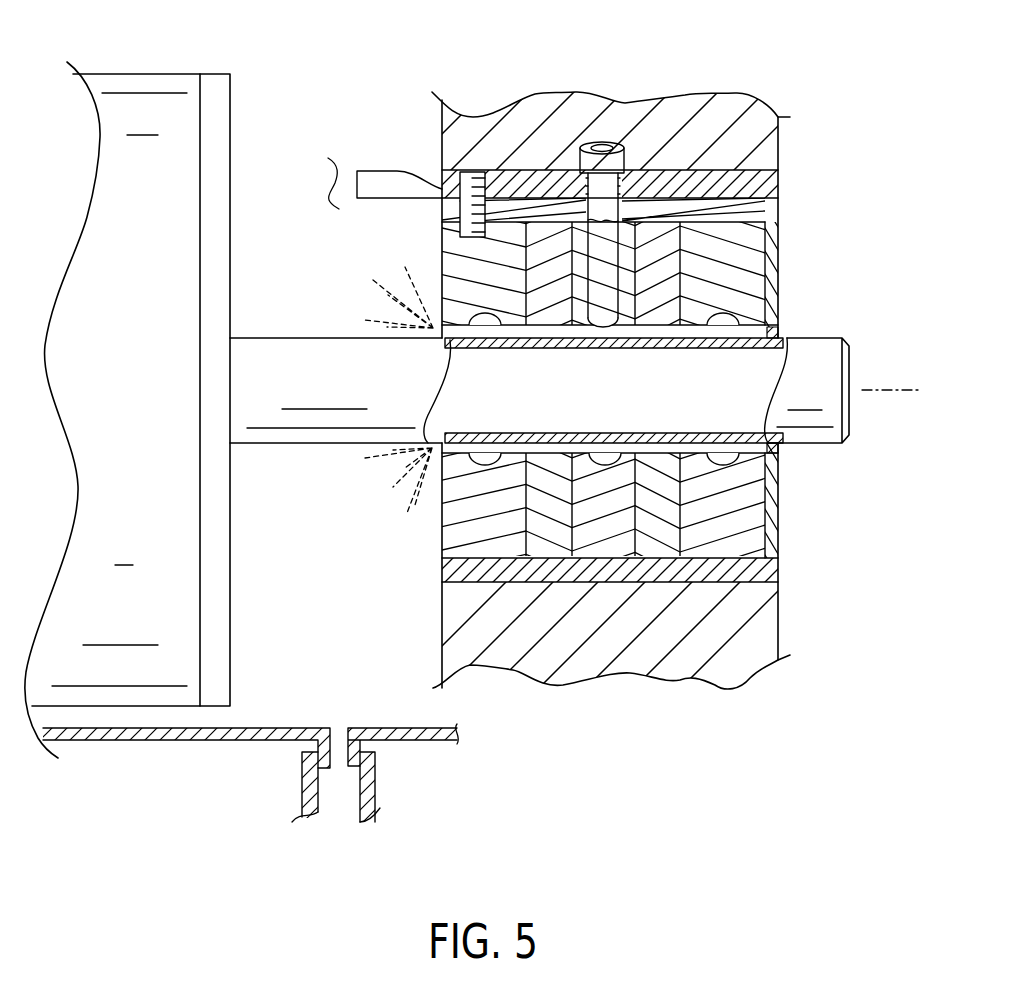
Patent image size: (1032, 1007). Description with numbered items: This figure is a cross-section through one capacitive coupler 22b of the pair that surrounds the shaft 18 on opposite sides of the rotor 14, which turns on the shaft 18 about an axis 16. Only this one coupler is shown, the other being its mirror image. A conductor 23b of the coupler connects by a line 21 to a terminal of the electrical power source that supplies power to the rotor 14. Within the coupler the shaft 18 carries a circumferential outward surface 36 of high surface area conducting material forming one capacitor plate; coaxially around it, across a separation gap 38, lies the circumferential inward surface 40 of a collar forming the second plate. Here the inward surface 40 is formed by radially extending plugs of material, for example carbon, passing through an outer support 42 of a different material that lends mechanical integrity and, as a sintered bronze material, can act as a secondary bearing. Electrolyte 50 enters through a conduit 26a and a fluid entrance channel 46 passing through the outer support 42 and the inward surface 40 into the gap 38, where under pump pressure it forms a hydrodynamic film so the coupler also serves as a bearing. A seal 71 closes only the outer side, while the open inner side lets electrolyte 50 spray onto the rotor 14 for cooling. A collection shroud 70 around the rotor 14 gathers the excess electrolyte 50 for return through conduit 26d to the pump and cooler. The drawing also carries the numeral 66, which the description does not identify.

The rotor 14 is at (141, 398).
The axis 16 is at (893, 392).
The shaft 18 is at (817, 348).
The lines 21 is at (347, 177).
The capacitive coupler 22b is at (802, 42).
The conductor 23b is at (440, 179).
The conduit 26a is at (624, 143).
The conduit 26d is at (376, 796).
The circumferential outward surface 36 is at (613, 432).
The separation gap 38 is at (787, 446).
The circumferential inward surface 40 is at (665, 325).
The outer support 42 is at (778, 181).
The fluid entrance channel 46 is at (609, 285).
The electrolyte 50 is at (410, 500).
The housing 66 is at (763, 623).
The collection shroud 70 is at (247, 742).
The seal 71 is at (780, 333).